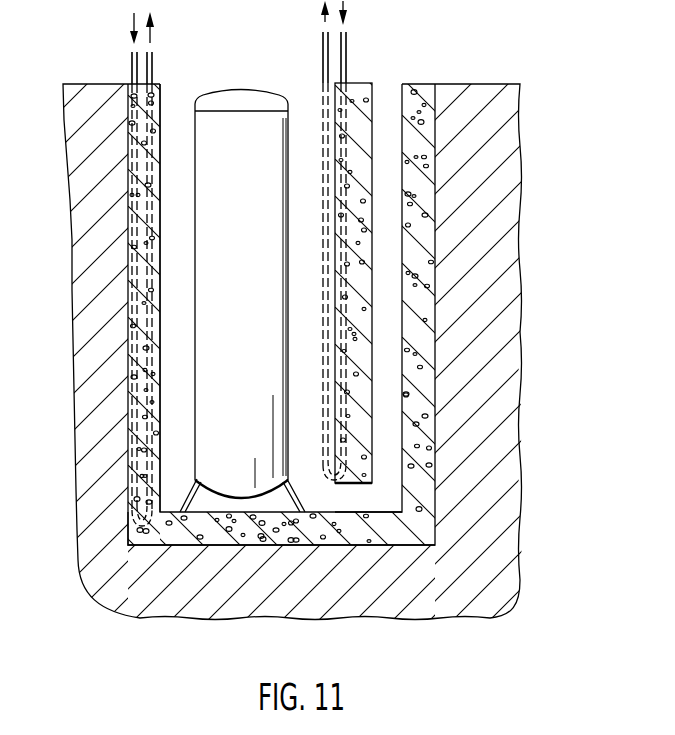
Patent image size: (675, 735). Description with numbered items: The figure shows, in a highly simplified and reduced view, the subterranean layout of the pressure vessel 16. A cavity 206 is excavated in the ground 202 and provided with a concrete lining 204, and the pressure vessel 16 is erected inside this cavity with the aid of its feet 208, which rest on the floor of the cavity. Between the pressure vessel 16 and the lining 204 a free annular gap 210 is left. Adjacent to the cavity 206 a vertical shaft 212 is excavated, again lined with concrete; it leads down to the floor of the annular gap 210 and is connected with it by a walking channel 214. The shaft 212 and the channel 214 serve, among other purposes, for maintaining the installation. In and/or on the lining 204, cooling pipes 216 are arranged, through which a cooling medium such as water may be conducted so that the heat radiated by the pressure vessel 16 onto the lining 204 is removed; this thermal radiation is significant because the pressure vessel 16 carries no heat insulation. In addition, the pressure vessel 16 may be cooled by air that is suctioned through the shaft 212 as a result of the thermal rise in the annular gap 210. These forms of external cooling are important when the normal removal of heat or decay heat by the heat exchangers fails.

The pressure vessel 16 is at (252, 296).
The ground 202 is at (482, 290).
The lining 204 is at (140, 270).
The cavity 206 is at (137, 556).
The feet 208 is at (300, 497).
The annular gap 210 is at (192, 296).
The vertical shaft 212 is at (383, 102).
The walking channel 214 is at (365, 500).
The cooling pipes 216 is at (132, 62).